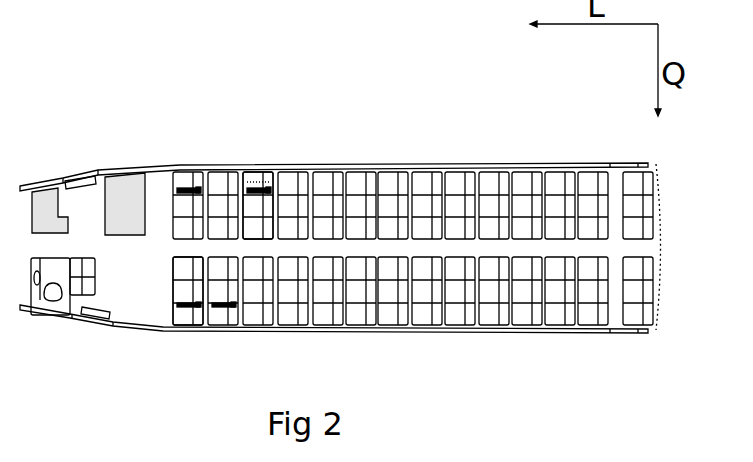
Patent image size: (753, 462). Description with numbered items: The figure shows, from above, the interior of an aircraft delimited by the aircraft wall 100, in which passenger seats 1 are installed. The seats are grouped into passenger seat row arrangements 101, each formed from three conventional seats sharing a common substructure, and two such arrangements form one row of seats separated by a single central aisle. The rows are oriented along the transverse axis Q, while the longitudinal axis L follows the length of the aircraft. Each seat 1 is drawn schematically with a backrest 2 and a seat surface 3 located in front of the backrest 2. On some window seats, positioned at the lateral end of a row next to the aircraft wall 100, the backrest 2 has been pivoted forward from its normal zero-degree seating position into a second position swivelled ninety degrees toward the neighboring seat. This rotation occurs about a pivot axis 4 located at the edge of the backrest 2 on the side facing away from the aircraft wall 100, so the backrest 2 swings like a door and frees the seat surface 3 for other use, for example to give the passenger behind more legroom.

The passenger seat 1 is at (263, 172).
The backrest 2 is at (190, 187).
The seat surface 3 is at (182, 178).
The pivot axis 4 is at (268, 180).
The aircraft wall 100 is at (450, 163).
The passenger seat row arrangement 101 is at (187, 290).